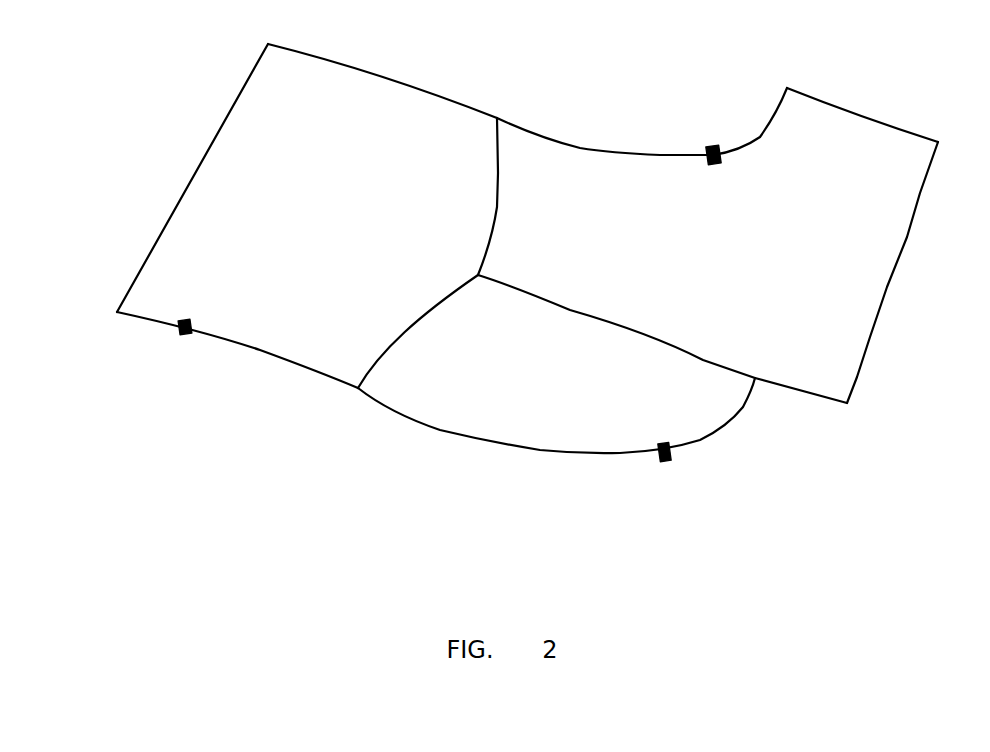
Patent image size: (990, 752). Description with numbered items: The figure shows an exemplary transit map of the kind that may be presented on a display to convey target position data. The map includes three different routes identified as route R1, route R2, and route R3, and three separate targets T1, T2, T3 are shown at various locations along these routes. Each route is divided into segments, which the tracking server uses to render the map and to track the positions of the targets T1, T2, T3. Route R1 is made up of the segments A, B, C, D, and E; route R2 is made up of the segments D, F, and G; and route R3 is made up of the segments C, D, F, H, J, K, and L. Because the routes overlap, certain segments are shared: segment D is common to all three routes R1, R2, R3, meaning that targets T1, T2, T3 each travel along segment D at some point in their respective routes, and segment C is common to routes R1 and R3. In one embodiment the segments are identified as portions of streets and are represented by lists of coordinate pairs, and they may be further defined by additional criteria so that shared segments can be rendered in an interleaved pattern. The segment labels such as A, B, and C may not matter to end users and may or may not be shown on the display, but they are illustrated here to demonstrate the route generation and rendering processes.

The segment A is at (192, 178).
The segment B is at (382, 80).
The segment C is at (483, 196).
The segment D is at (418, 331).
The segment E is at (237, 351).
The segment F is at (556, 440).
The segment G is at (616, 326).
The segment H is at (801, 403).
The segment J is at (892, 272).
The segment K is at (862, 113).
The segment L is at (642, 121).
The route R1 is at (327, 214).
The route R2 is at (548, 385).
The route R3 is at (737, 238).
The target T1 is at (189, 310).
The target T2 is at (671, 436).
The target T3 is at (713, 172).